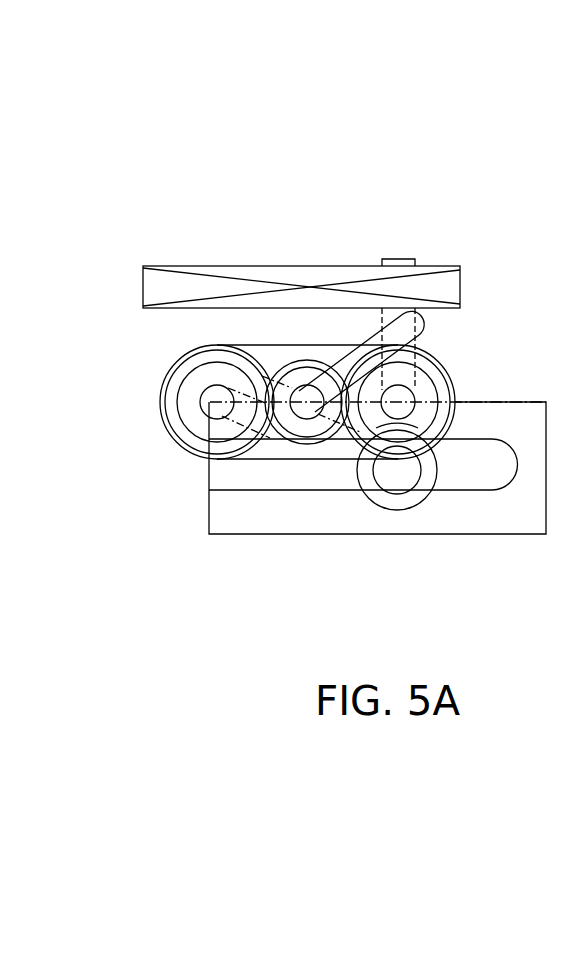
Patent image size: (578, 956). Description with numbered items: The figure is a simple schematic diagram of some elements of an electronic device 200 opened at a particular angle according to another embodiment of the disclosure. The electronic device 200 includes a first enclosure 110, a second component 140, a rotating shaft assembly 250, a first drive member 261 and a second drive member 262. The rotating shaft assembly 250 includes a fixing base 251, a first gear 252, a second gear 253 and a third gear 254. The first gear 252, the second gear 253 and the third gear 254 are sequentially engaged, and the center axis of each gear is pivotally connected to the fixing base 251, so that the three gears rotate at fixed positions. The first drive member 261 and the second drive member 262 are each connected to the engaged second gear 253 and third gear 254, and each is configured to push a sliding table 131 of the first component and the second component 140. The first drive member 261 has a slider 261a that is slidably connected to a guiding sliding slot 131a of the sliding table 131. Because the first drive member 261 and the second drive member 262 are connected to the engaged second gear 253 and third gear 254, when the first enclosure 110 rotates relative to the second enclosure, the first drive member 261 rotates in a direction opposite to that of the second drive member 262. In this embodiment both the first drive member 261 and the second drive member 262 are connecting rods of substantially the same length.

The electronic device 200 is at (126, 72).
The rotating shaft assembly 250 is at (329, 304).
The fixing base 251 is at (172, 352).
The third gear 254 is at (222, 375).
The second gear 253 is at (293, 385).
The first gear 252 is at (372, 393).
The second component 140 is at (345, 273).
The first enclosure 110 is at (399, 258).
The second drive member 262 is at (428, 323).
The first drive member 261 is at (345, 450).
The slider 261a is at (402, 476).
The sliding table 131 is at (455, 516).
The guiding sliding slot 131a is at (491, 498).